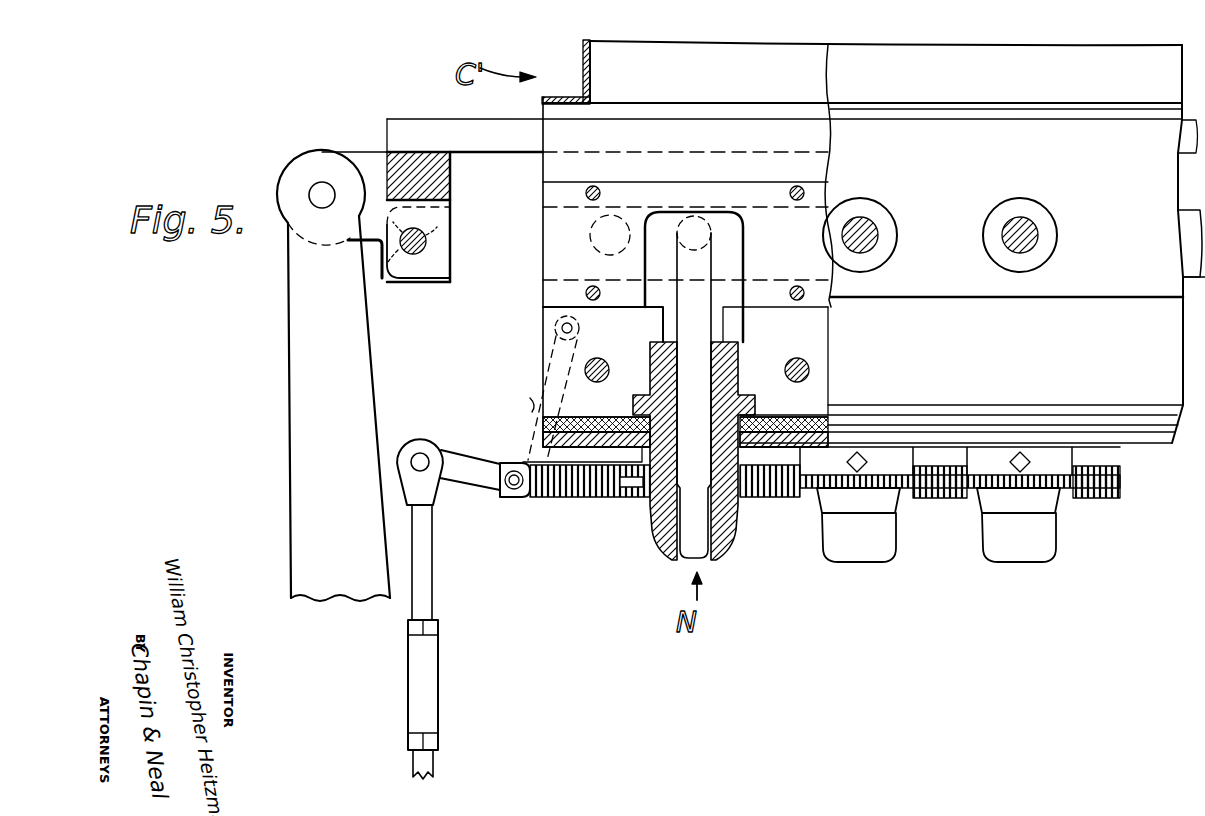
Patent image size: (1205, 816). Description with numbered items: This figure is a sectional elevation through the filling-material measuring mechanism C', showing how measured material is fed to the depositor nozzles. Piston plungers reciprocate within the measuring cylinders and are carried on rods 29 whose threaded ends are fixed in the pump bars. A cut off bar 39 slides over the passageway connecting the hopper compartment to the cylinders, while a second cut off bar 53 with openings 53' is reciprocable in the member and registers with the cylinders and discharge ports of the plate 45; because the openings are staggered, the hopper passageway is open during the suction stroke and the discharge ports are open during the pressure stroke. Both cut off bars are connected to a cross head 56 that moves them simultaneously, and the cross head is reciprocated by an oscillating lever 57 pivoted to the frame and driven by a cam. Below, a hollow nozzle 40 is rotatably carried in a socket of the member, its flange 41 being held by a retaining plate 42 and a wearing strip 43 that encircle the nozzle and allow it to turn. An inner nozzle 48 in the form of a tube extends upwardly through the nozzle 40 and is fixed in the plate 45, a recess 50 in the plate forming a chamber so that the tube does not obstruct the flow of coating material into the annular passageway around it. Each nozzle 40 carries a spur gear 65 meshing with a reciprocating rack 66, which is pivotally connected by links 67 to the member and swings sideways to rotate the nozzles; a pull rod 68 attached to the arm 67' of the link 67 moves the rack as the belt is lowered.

The rod 29 is at (1010, 230).
The cut off bar 39 is at (432, 135).
The hollow nozzle 40 is at (660, 505).
The flange 41 is at (750, 399).
The retaining plate 42 is at (543, 441).
The wearing strip 43 is at (543, 423).
The plate 45 is at (775, 268).
The inner nozzle 48 is at (694, 512).
The recess 50 is at (724, 250).
The cut off bar 53 is at (419, 244).
The opening 53' is at (554, 263).
The cross head 56 is at (430, 178).
The oscillating lever 57 is at (333, 375).
The spur gear 65 is at (764, 491).
The reciprocating rack 66 is at (590, 490).
The link 67 is at (534, 388).
The arm 67' is at (463, 483).
The pull rod 68 is at (427, 657).